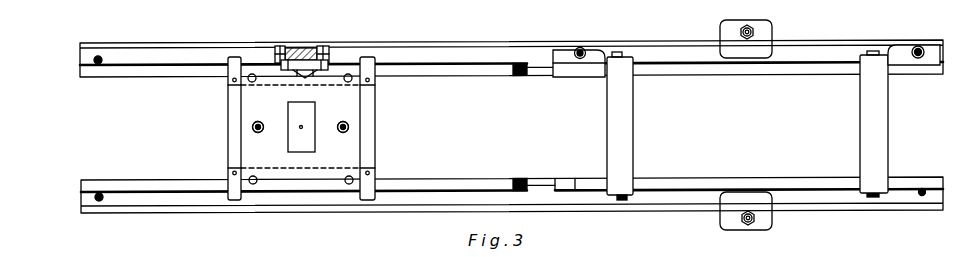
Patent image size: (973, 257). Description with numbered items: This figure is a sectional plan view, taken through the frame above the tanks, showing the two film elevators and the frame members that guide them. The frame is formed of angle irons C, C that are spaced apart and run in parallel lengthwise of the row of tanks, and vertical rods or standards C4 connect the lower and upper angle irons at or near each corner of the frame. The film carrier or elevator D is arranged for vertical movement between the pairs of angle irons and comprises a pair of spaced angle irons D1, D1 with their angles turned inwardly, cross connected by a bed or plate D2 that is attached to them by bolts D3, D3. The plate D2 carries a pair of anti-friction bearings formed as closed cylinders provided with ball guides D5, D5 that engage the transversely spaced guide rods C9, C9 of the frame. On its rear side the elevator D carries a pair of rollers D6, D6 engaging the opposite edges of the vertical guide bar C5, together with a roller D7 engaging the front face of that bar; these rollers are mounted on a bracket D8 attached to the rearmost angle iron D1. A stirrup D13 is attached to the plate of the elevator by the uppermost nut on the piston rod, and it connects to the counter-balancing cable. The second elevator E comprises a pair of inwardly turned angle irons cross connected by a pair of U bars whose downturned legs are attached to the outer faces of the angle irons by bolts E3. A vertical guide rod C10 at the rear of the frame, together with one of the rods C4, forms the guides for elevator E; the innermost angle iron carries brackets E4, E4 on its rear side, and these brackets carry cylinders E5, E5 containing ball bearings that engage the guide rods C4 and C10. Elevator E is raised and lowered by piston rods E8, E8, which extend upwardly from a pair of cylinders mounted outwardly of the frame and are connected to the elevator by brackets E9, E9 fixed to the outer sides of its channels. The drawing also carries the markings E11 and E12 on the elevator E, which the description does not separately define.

The angle iron C is at (520, 51).
The rod or standard C4 is at (95, 60).
The guide bar C5 is at (302, 48).
The guide rod C9 is at (252, 127).
The guide rod C10 is at (578, 48).
The film carrier or elevator D is at (224, 100).
The angle iron D1 is at (137, 70).
The bed or plate D2 is at (340, 102).
The bolt D3 is at (258, 81).
The ball guide D5 is at (256, 131).
The roller D6 is at (281, 49).
The roller D7 is at (310, 64).
The bracket D8 is at (316, 56).
The stirrup D13 is at (302, 112).
The elevator E is at (856, 143).
The bolt E3 is at (623, 56).
The bracket E4 is at (558, 52).
The cylinder E5 is at (616, 52).
The piston rod E8 is at (755, 29).
The bracket E9 is at (746, 125).
The bar E11 is at (690, 68).
The cross bar E12 is at (614, 119).